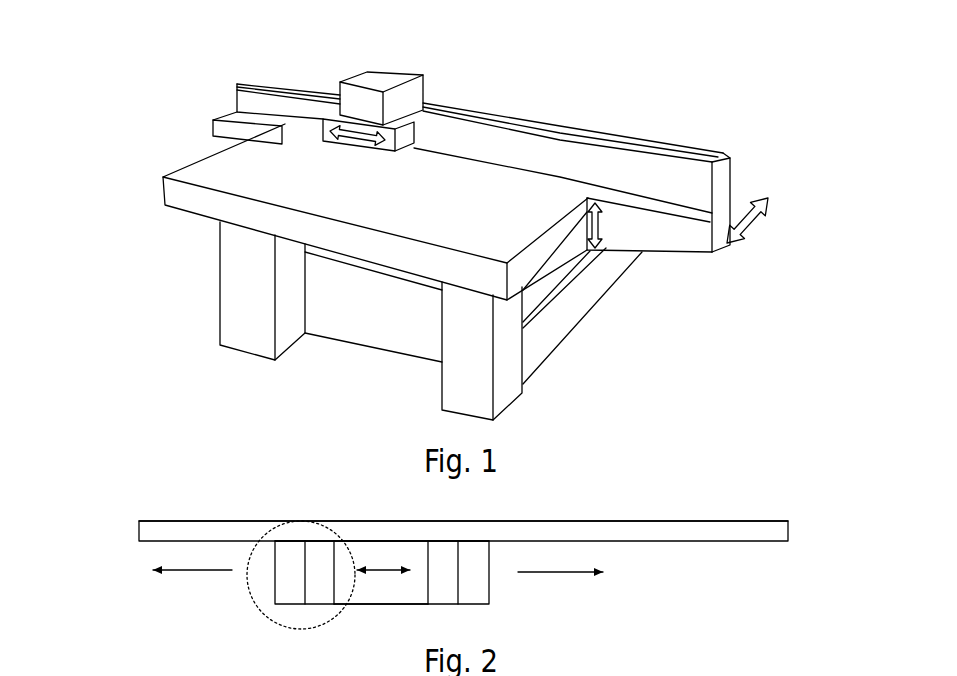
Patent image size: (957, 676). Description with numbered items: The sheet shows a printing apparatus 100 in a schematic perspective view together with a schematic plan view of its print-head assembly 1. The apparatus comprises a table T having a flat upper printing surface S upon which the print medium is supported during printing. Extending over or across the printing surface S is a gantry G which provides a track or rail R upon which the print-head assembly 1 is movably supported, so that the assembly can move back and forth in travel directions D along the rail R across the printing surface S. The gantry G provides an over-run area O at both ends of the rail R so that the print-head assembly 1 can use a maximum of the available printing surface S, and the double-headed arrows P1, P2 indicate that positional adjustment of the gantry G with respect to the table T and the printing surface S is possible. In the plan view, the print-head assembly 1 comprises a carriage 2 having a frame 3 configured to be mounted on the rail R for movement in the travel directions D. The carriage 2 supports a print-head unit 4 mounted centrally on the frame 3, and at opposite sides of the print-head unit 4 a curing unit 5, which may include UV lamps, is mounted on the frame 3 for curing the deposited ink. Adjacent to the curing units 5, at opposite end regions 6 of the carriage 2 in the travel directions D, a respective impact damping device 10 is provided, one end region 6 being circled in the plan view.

In FIG. 1, the print-head assembly 1 is at (322, 57).
In FIG. 2, the print-head assembly 1 is at (212, 625).
In FIG. 1, the carriage 2 is at (378, 80).
In FIG. 2, the carriage 2 is at (453, 528).
In FIG. 1, the frame 3 is at (338, 97).
In FIG. 2, the frame 3 is at (360, 545).
In FIG. 2, the print-head unit 4 is at (380, 602).
In FIG. 2, the curing unit 5 is at (322, 595).
In FIG. 2, the end region 6 is at (290, 617).
In FIG. 2, the impact damping device 10 is at (287, 582).
In FIG. 1, the printing apparatus 100 is at (703, 85).
In FIG. 1, the over-run area O is at (238, 100).
In FIG. 1, the printing surface S is at (253, 160).
In FIG. 1, the track or rail R is at (485, 118).
In FIG. 2, the track or rail R is at (652, 531).
In FIG. 1, the gantry G is at (553, 120).
In FIG. 2, the gantry G is at (687, 512).
In FIG. 1, the travel directions D is at (357, 145).
In FIG. 2, the travel directions D is at (378, 571).
In FIG. 1, the table T is at (220, 250).
In FIG. 1, the double-headed arrow P1 is at (752, 217).
In FIG. 1, the double-headed arrow P2 is at (600, 226).